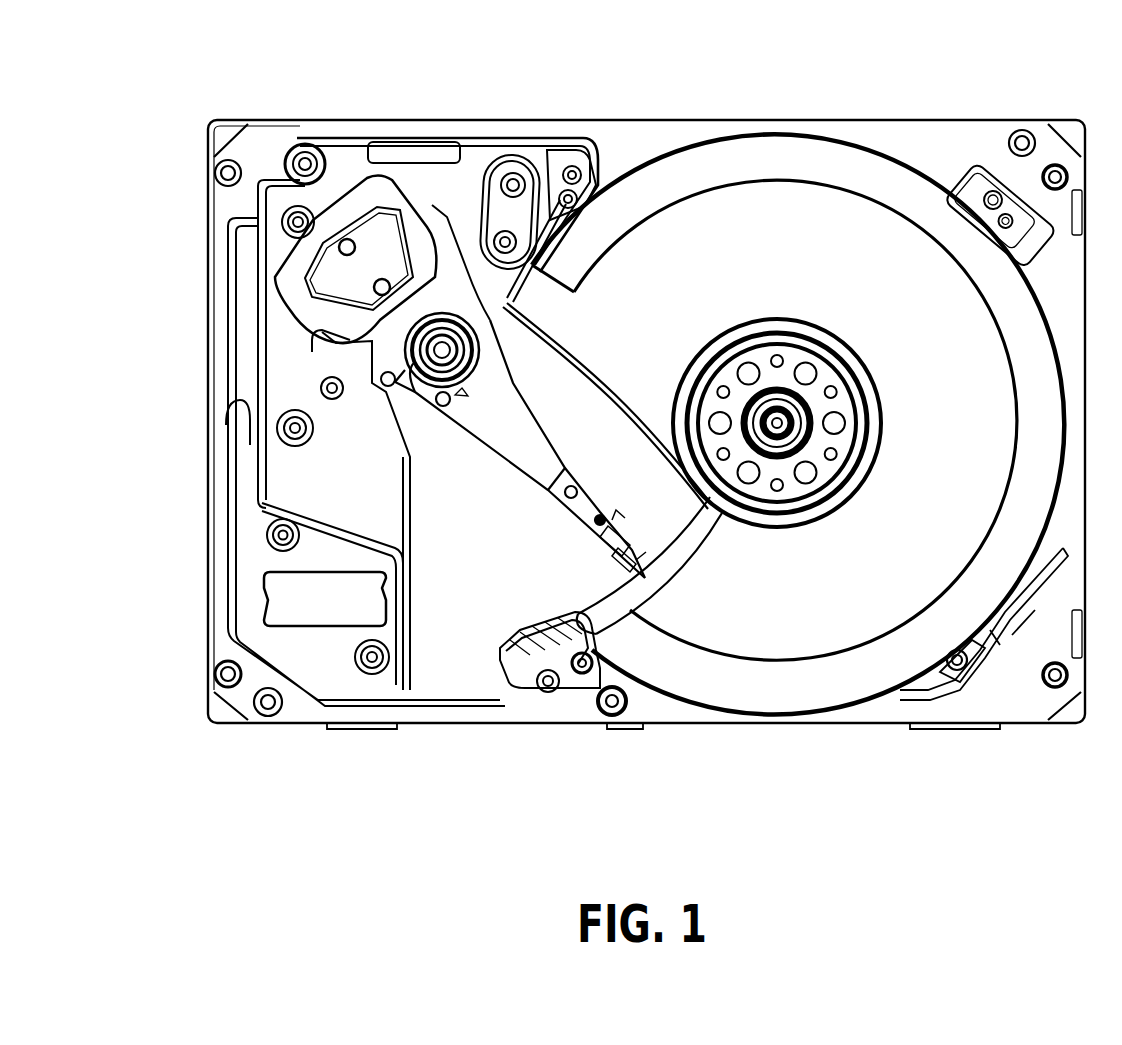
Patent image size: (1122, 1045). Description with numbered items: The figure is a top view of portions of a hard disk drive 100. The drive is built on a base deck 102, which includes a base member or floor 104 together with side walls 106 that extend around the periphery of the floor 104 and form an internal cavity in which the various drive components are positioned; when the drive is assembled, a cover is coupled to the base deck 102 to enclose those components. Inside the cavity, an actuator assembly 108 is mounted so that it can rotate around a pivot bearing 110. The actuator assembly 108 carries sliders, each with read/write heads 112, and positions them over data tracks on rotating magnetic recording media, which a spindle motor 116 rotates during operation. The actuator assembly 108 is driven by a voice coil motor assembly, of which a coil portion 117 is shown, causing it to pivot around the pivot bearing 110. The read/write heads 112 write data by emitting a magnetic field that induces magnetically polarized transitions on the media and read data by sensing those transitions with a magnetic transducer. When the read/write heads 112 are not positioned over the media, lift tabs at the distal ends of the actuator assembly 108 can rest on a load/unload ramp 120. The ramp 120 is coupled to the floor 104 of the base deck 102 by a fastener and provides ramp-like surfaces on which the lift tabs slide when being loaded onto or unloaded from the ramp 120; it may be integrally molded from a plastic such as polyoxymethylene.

The hard disk drive 100 is at (166, 114).
The base deck 102 is at (480, 185).
The floor 104 is at (493, 518).
The side walls 106 is at (577, 133).
The actuator assembly 108 is at (517, 415).
The pivot bearing 110 is at (455, 351).
The read/write heads 112 is at (643, 570).
The spindle motor 116 is at (782, 375).
The coil portion 117 is at (343, 212).
The load/unload ramp 120 is at (515, 626).